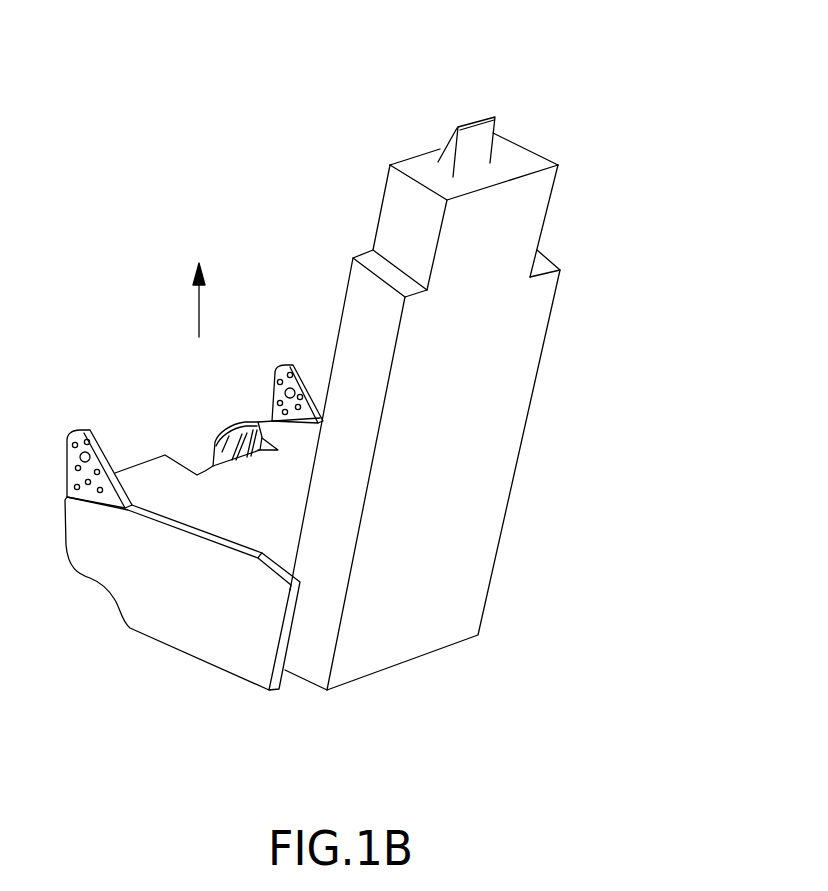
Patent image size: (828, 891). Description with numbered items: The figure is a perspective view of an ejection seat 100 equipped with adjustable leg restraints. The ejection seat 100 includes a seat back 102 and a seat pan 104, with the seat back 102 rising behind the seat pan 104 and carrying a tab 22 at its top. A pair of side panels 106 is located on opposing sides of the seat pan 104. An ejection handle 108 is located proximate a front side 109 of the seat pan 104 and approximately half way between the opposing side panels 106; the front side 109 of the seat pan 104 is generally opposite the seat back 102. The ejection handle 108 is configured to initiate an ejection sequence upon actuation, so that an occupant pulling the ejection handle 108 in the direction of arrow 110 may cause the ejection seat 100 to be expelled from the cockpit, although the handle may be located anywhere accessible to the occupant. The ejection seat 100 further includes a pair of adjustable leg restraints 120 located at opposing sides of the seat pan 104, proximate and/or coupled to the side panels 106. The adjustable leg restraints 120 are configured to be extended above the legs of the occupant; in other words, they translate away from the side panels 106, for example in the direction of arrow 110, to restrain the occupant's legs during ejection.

The ejection seat 100 is at (618, 154).
The tab 22 is at (488, 115).
The seat back 102 is at (453, 475).
The seat pan 104 is at (274, 504).
The side panels 106 is at (182, 590).
The ejection handle 108 is at (217, 438).
The front side 109 is at (165, 455).
The arrow 110 is at (198, 313).
The adjustable leg restraints 120 is at (74, 432).